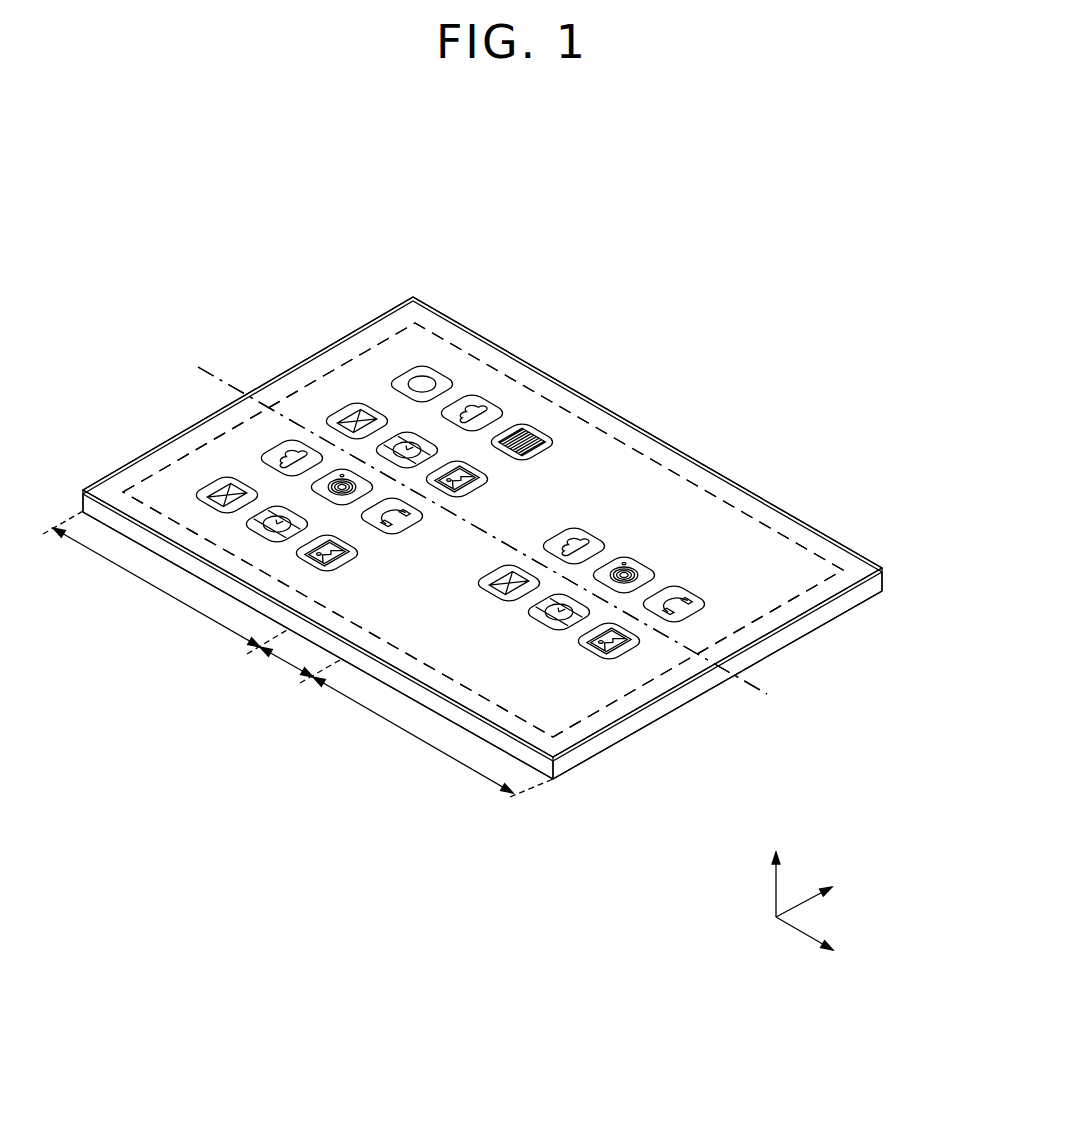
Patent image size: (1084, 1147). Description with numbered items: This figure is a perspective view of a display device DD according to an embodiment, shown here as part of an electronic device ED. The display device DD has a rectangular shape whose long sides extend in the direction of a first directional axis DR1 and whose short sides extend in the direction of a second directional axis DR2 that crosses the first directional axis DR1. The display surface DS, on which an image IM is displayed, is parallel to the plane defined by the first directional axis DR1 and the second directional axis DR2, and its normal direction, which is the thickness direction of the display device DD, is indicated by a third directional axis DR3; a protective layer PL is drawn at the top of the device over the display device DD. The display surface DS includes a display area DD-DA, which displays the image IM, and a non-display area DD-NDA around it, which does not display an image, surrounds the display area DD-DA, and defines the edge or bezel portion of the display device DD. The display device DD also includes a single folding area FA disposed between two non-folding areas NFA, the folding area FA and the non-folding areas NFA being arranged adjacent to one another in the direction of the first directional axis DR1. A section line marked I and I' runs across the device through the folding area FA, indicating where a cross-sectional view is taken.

The electronic device ED is at (541, 265).
The display surface DS is at (662, 345).
The non-display area DD-NDA is at (632, 432).
The display area DD-DA is at (697, 512).
The image IM is at (338, 408).
The protective layer PL is at (882, 568).
The display device DD is at (880, 583).
The non-folding areas NFA is at (298, 653).
The folding area FA is at (300, 667).
The section line I is at (460, 530).
The section line I' is at (482, 550).
The first directional axis DR1 is at (827, 943).
The second directional axis DR2 is at (827, 893).
The third directional axis DR3 is at (775, 871).